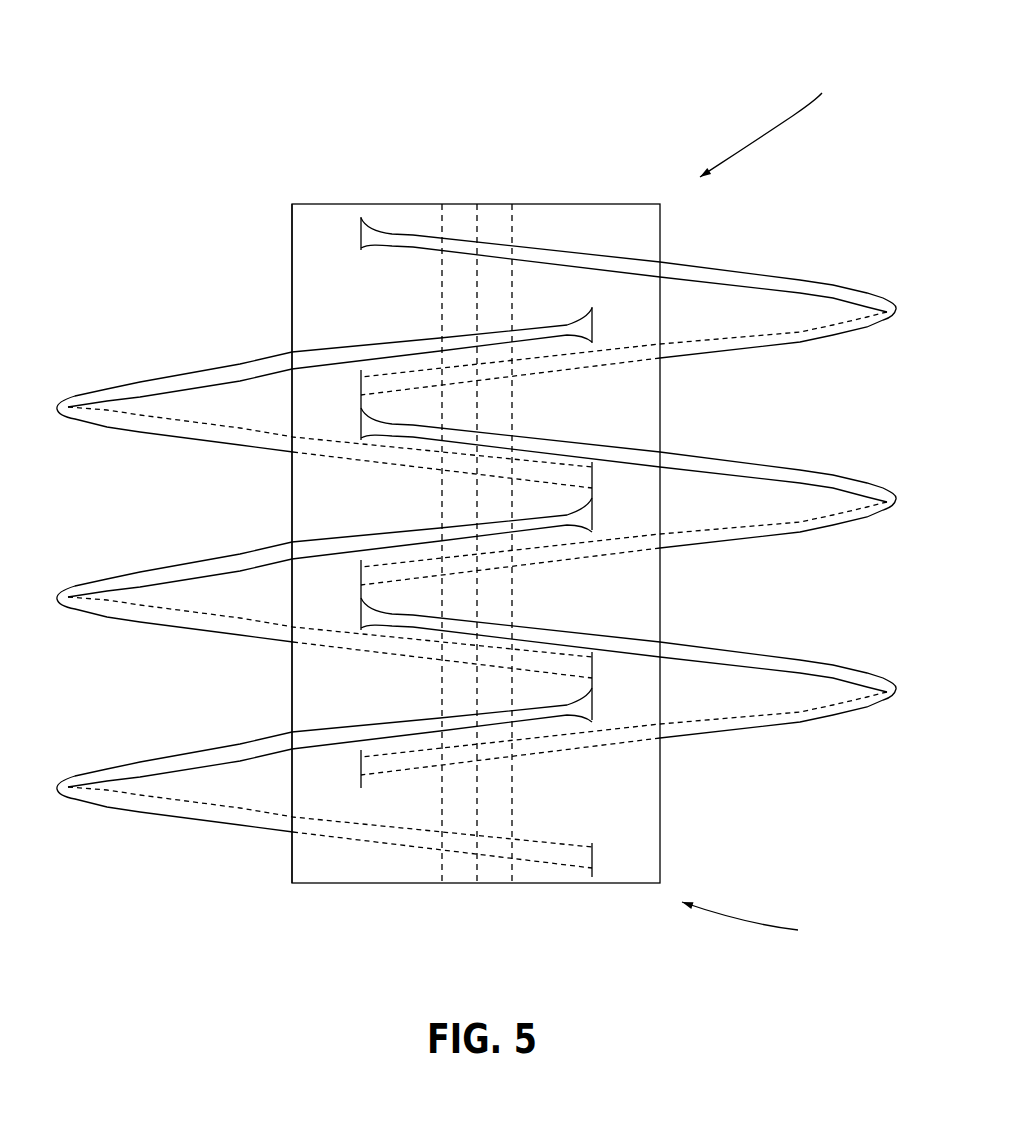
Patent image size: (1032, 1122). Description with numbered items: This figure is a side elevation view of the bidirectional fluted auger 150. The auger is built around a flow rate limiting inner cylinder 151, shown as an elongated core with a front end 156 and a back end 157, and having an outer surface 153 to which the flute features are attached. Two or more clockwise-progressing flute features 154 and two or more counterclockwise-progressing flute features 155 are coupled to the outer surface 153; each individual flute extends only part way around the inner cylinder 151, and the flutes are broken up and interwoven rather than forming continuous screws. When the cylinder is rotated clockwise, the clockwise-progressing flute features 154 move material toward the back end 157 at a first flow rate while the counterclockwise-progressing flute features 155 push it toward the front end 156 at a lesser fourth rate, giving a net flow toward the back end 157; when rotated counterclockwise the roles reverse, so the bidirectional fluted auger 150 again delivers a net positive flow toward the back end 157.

The bidirectional fluted auger 150 is at (227, 93).
The inner cylinder 151 is at (538, 215).
The outer surface 153 is at (292, 282).
The clockwise-progressing flute features 154 is at (891, 322).
The counterclockwise-progressing flute features 155 is at (64, 401).
The front end 156 is at (770, 121).
The back end 157 is at (759, 923).